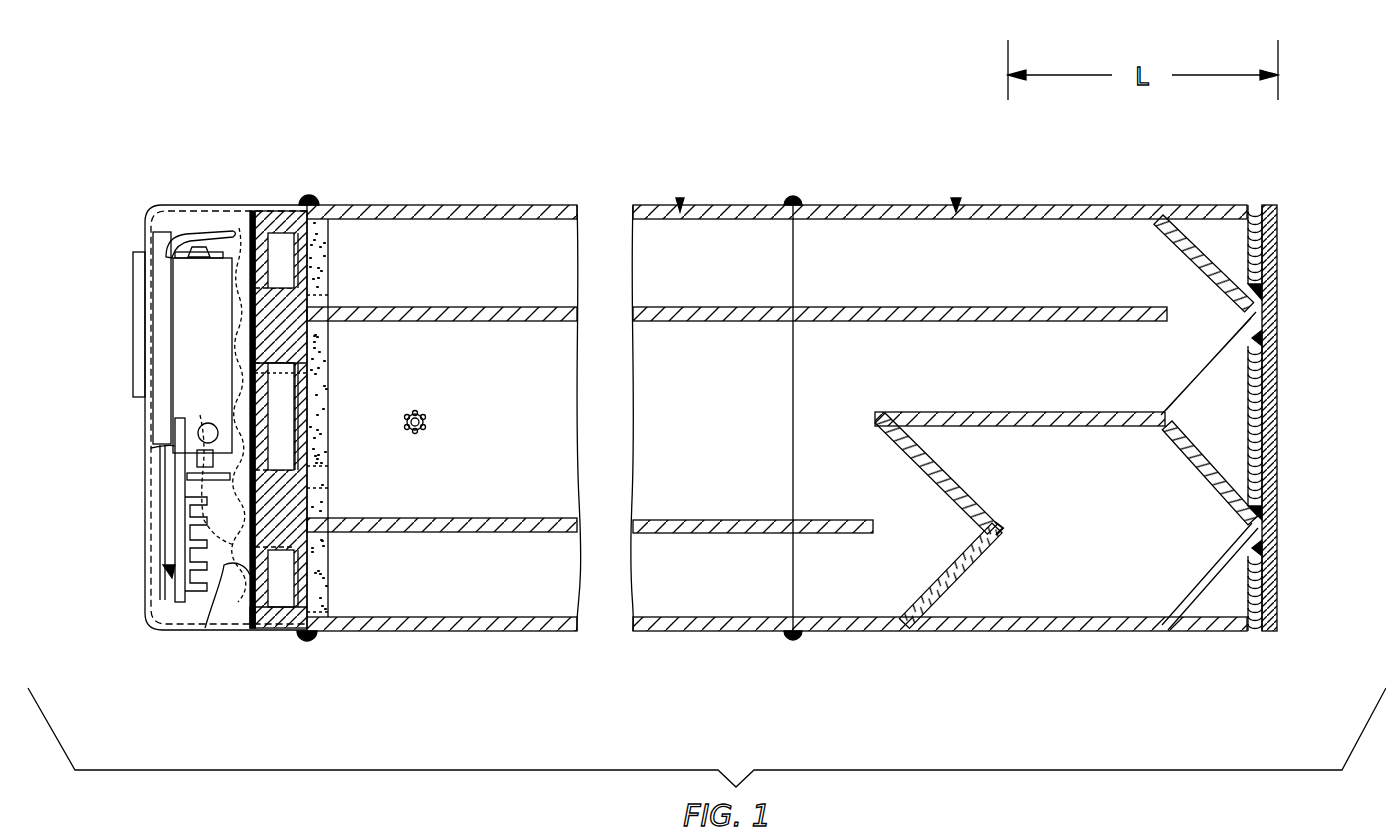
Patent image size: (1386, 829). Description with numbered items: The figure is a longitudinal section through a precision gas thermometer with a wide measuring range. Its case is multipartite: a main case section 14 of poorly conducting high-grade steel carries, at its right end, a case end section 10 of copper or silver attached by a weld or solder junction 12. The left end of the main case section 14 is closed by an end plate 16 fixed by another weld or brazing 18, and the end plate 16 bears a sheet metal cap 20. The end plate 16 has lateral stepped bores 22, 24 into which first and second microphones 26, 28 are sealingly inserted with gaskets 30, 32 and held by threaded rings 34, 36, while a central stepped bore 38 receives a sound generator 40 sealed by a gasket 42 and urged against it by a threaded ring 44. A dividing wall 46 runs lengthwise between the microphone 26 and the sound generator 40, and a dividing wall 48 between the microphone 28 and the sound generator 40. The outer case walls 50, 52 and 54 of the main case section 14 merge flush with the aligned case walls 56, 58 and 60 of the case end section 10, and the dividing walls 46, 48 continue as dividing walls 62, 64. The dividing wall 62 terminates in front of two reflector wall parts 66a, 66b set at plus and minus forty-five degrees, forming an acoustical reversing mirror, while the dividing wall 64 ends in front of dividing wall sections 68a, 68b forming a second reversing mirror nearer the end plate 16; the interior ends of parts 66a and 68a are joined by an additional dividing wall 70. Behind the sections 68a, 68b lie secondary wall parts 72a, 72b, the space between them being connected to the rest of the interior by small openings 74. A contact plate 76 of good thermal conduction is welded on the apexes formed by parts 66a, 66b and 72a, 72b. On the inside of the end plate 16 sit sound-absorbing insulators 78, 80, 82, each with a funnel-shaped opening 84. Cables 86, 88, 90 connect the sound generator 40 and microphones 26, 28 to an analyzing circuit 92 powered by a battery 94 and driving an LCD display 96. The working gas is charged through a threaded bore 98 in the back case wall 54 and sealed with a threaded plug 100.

The case end section 10 is at (1000, 386).
The weld or solder junction 12 is at (793, 205).
The main case section 14 is at (680, 205).
The end plate 16 is at (240, 205).
The weld or brazing 18 is at (309, 200).
The cap 20 is at (205, 205).
The lateral stepped bore 22 is at (356, 425).
The lateral stepped bore 24 is at (278, 628).
The first sound receiver or microphone 26 is at (305, 262).
The second sound receiver or microphone 28 is at (325, 580).
The gasket 30 is at (325, 300).
The gasket 32 is at (320, 612).
The threaded ring 34 is at (175, 205).
The threaded ring 36 is at (256, 628).
The central stepped bore 38 is at (302, 360).
The sound generator 40 is at (290, 428).
The gasket 42 is at (320, 466).
The threaded ring 44 is at (320, 488).
The dividing wall 46 is at (433, 307).
The dividing wall 48 is at (437, 532).
The case wall 50 is at (493, 205).
The case wall 52 is at (500, 631).
The back case wall 54 is at (444, 425).
The case wall 56 is at (842, 205).
The case wall 58 is at (818, 631).
The case wall 60 is at (939, 386).
The dividing wall 62 is at (903, 307).
The dividing wall 64 is at (873, 533).
The reflector wall part 66a is at (1200, 380).
The reflector wall part 66b is at (1207, 243).
The dividing wall section 68a is at (960, 475).
The dividing wall section 68b is at (948, 584).
The additional dividing wall 70 is at (1020, 487).
The secondary wall part 72a is at (1192, 440).
The secondary wall part 72b is at (1202, 590).
The opening 74 is at (985, 556).
The contact plate 76 is at (1272, 345).
The insulator 78 is at (351, 363).
The insulator 80 is at (315, 634).
The insulator 82 is at (305, 373).
The funnel-shaped opening 84 is at (300, 406).
The cable 86 is at (176, 536).
The cable 88 is at (230, 307).
The cable 90 is at (207, 628).
The analyzing circuit 92 is at (170, 572).
The battery 94 is at (220, 398).
The LCD display 96 is at (137, 350).
The threaded bore 98 is at (424, 412).
The threaded plug 100 is at (422, 430).